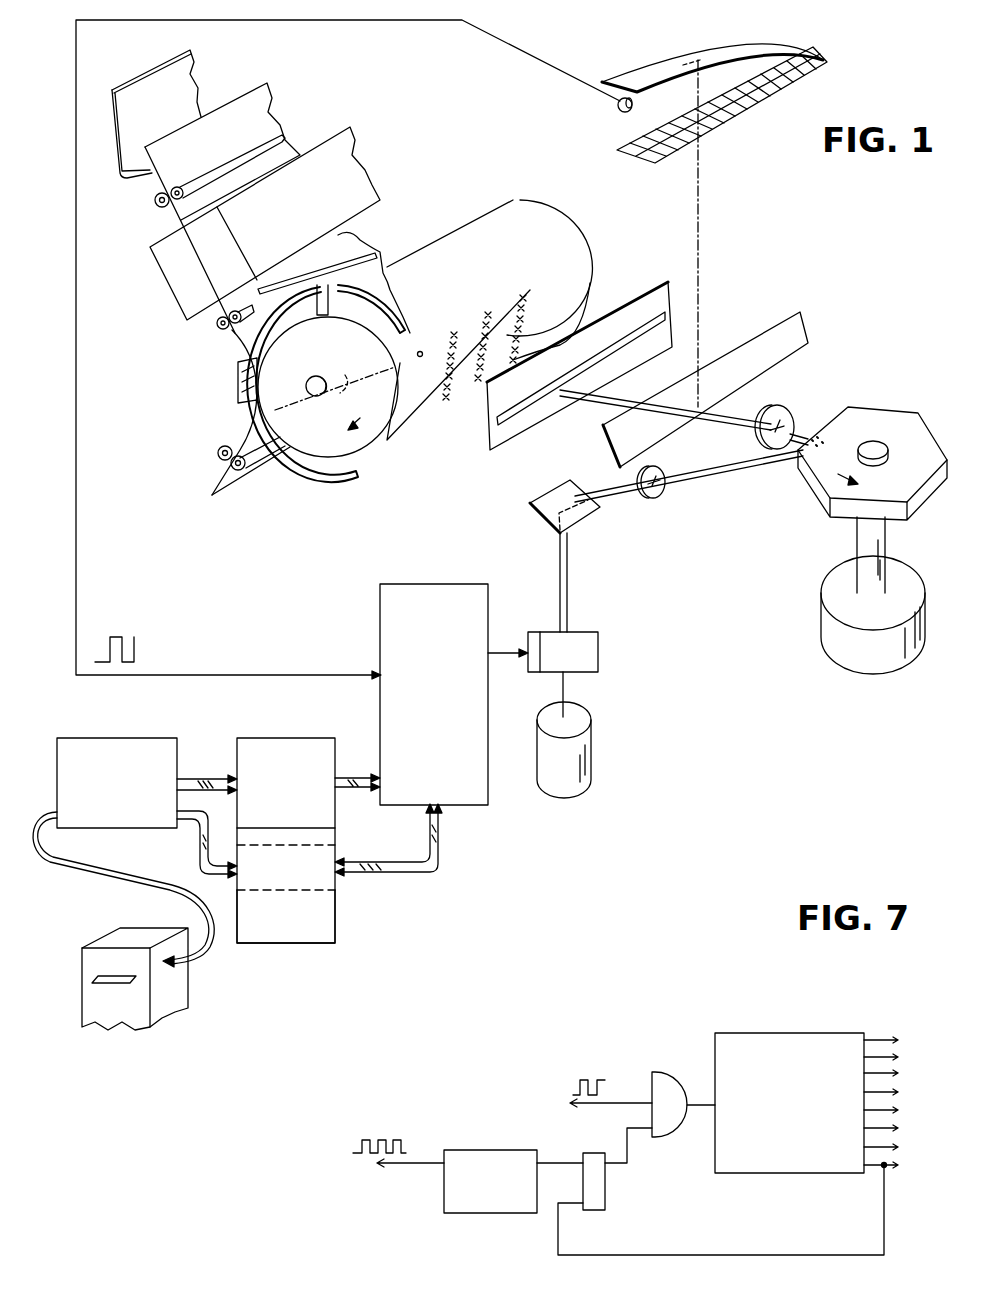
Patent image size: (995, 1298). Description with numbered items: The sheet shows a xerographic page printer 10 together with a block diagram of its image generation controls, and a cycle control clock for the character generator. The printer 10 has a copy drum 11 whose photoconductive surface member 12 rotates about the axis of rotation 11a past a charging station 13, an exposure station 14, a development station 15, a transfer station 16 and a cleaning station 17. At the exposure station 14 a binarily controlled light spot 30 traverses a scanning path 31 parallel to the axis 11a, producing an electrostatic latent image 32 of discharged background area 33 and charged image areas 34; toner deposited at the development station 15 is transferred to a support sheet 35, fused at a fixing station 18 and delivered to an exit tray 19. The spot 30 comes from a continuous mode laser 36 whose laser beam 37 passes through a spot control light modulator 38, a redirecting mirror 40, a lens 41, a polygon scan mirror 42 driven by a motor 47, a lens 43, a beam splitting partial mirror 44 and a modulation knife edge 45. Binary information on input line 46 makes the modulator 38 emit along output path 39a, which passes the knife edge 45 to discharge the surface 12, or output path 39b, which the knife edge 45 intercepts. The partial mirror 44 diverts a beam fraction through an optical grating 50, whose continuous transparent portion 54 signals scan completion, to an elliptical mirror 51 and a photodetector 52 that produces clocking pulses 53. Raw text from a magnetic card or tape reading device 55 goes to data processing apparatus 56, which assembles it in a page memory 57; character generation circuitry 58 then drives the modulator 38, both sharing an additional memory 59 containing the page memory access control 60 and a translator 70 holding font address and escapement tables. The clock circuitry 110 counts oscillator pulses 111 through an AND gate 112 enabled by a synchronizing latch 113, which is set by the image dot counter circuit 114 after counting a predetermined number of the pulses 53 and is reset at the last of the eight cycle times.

In FIG. 1, the xerographic page printer 10 is at (265, 487).
In FIG. 1, the copy drum 11 is at (382, 445).
In FIG. 1, the axis of rotation 11a is at (290, 398).
In FIG. 1, the photoconductive surface member 12 is at (386, 366).
In FIG. 1, the charging station 13 is at (378, 253).
In FIG. 1, the exposure station 14 is at (466, 312).
In FIG. 1, the development station 15 is at (357, 480).
In FIG. 1, the transfer station 16 is at (237, 380).
In FIG. 1, the cleaning station 17 is at (303, 280).
In FIG. 1, the fixing station 18 is at (168, 278).
In FIG. 1, the exit pocket or tray 19 is at (122, 126).
In FIG. 1, the light spot 30 is at (420, 350).
In FIG. 1, the scanning path 31 is at (347, 392).
In FIG. 1, the electrostatic latent image 32 is at (528, 312).
In FIG. 1, the white or background area 33 is at (440, 347).
In FIG. 1, the image areas 34 is at (487, 312).
In FIG. 1, the support sheet 35 is at (247, 422).
In FIG. 1, the continuous mode laser 36 is at (592, 732).
In FIG. 1, the laser beam 37 is at (568, 693).
In FIG. 1, the spot control light modulator 38 is at (598, 640).
In FIG. 1, the output path 39a is at (559, 568).
In FIG. 1, the output path 39b is at (570, 596).
In FIG. 1, the redirecting mirror 40 is at (592, 520).
In FIG. 1, the lens 41 is at (665, 491).
In FIG. 1, the scan mirror 42 is at (888, 406).
In FIG. 1, the lens 43 is at (790, 416).
In FIG. 1, the beam splitting partial mirror 44 is at (806, 340).
In FIG. 1, the modulation knife edge 45 is at (518, 418).
In FIG. 1, the input line 46 is at (507, 642).
In FIG. 1, the motor 47 is at (843, 657).
In FIG. 1, the optical grating 50 is at (745, 110).
In FIG. 1, the elliptical mirror 51 is at (782, 46).
In FIG. 1, the photodetector 52 is at (617, 112).
In FIG. 1, the clocking pulses 53 is at (122, 636).
In FIG. 7, the clocking pulses 53 is at (378, 1140).
In FIG. 1, the continuous transparent portion 54 is at (655, 163).
In FIG. 1, the magnetic card or tape reading device 55 is at (188, 972).
In FIG. 1, the data processing apparatus 56 is at (118, 828).
In FIG. 1, the page memory 57 is at (236, 752).
In FIG. 1, the character generation circuitry 58 is at (486, 806).
In FIG. 1, the additional memory 59 is at (327, 935).
In FIG. 1, the page memory access control 60 is at (320, 891).
In FIG. 1, the translator 70 is at (292, 944).
In FIG. 7, the clock circuitry 110 is at (805, 1033).
In FIG. 7, the pulses 111 is at (592, 1080).
In FIG. 7, the AND gate 112 is at (666, 1072).
In FIG. 7, the synchronizing latch 113 is at (605, 1208).
In FIG. 7, the image dot counter circuit 114 is at (470, 1213).